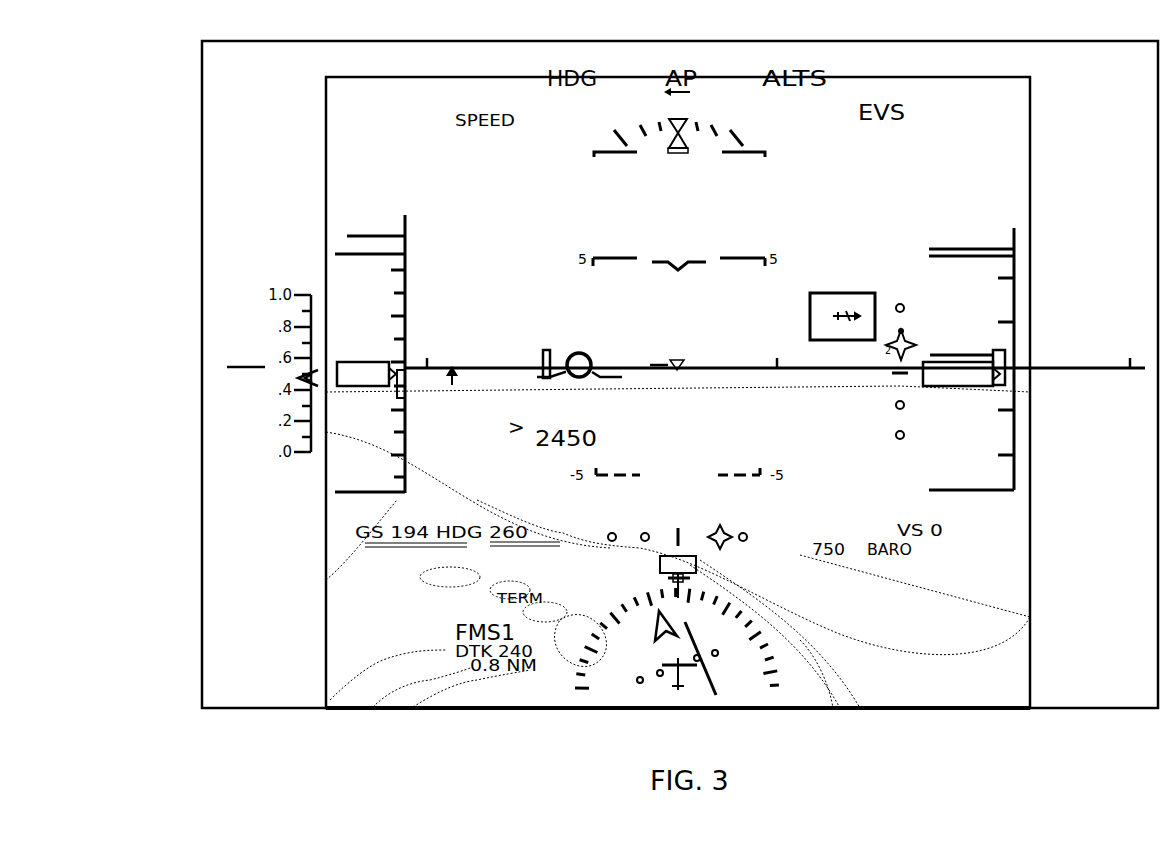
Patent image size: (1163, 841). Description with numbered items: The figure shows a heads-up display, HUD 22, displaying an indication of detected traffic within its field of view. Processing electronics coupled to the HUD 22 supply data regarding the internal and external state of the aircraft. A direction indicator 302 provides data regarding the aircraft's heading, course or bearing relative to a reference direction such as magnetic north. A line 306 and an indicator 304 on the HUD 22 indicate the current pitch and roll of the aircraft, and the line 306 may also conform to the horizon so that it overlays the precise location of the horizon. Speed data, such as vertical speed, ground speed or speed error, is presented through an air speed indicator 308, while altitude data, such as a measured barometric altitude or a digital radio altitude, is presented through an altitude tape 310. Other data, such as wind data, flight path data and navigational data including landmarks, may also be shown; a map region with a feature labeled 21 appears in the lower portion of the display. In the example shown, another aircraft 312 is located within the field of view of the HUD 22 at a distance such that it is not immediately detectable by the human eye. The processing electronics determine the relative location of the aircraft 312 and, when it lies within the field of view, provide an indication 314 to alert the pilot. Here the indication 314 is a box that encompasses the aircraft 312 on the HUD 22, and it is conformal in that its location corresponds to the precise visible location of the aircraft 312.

The terrain map feature 21 is at (558, 597).
The HUD 22 is at (201, 173).
The direction indicator 302 is at (620, 690).
The indicator 304 is at (633, 104).
The line 306 is at (503, 366).
The air speed indicator 308 is at (407, 280).
The altitude tape 310 is at (935, 248).
The aircraft 312 is at (843, 305).
The indication 314 is at (810, 312).